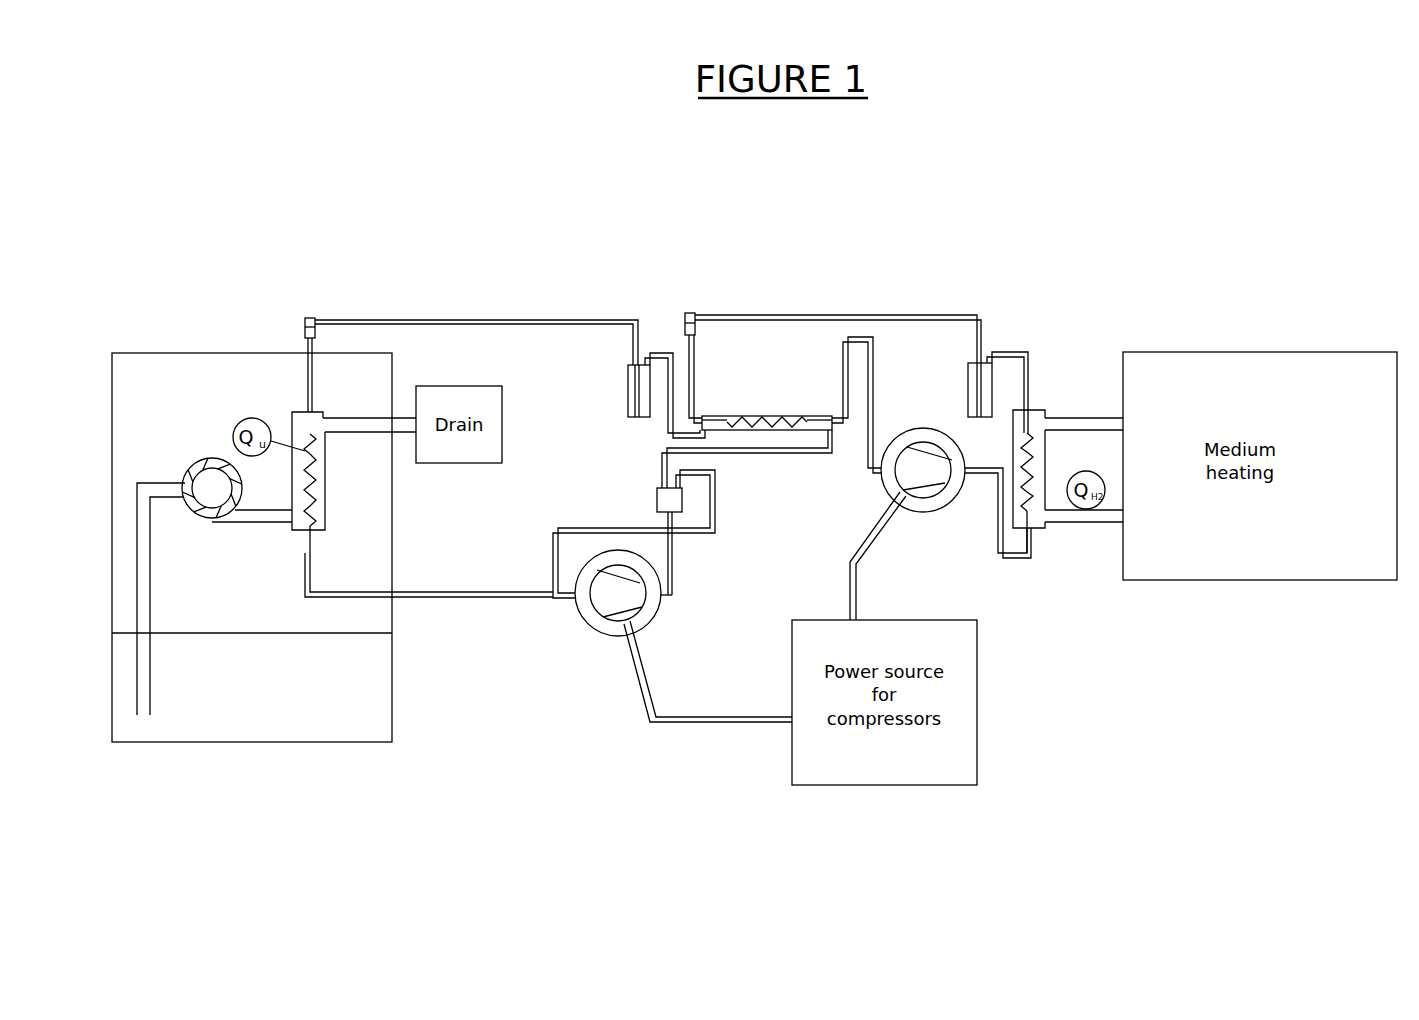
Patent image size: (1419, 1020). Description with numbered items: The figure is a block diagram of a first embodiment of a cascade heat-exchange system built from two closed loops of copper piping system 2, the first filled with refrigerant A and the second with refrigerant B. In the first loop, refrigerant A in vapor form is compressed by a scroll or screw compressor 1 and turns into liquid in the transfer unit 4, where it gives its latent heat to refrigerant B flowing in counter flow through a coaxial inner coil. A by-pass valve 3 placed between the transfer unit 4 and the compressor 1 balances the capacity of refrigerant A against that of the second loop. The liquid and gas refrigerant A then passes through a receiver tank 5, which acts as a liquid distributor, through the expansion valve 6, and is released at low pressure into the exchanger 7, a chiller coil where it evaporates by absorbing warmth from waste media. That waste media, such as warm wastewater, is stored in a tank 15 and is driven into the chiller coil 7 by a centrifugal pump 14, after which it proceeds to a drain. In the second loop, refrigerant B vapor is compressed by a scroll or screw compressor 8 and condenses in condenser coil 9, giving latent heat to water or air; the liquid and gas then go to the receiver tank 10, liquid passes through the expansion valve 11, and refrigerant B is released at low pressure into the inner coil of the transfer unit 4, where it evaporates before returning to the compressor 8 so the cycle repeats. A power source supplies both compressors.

The compressor 1 is at (637, 622).
The copper piping system 2 is at (673, 572).
The by-pass valve 3 is at (654, 498).
The transfer unit 4 is at (726, 415).
The receiver tank 5 is at (624, 392).
The expansion valve 6 is at (309, 315).
The exchanger 7 is at (314, 494).
The compressor 8 is at (930, 442).
The condenser coil 9 is at (1030, 458).
The receiver tank 10 is at (967, 373).
The expansion valve 11 is at (689, 311).
The centrifugal pump 14 is at (188, 460).
The tank 15 is at (252, 547).
The refrigerant A is at (613, 630).
The refrigerant B is at (920, 507).